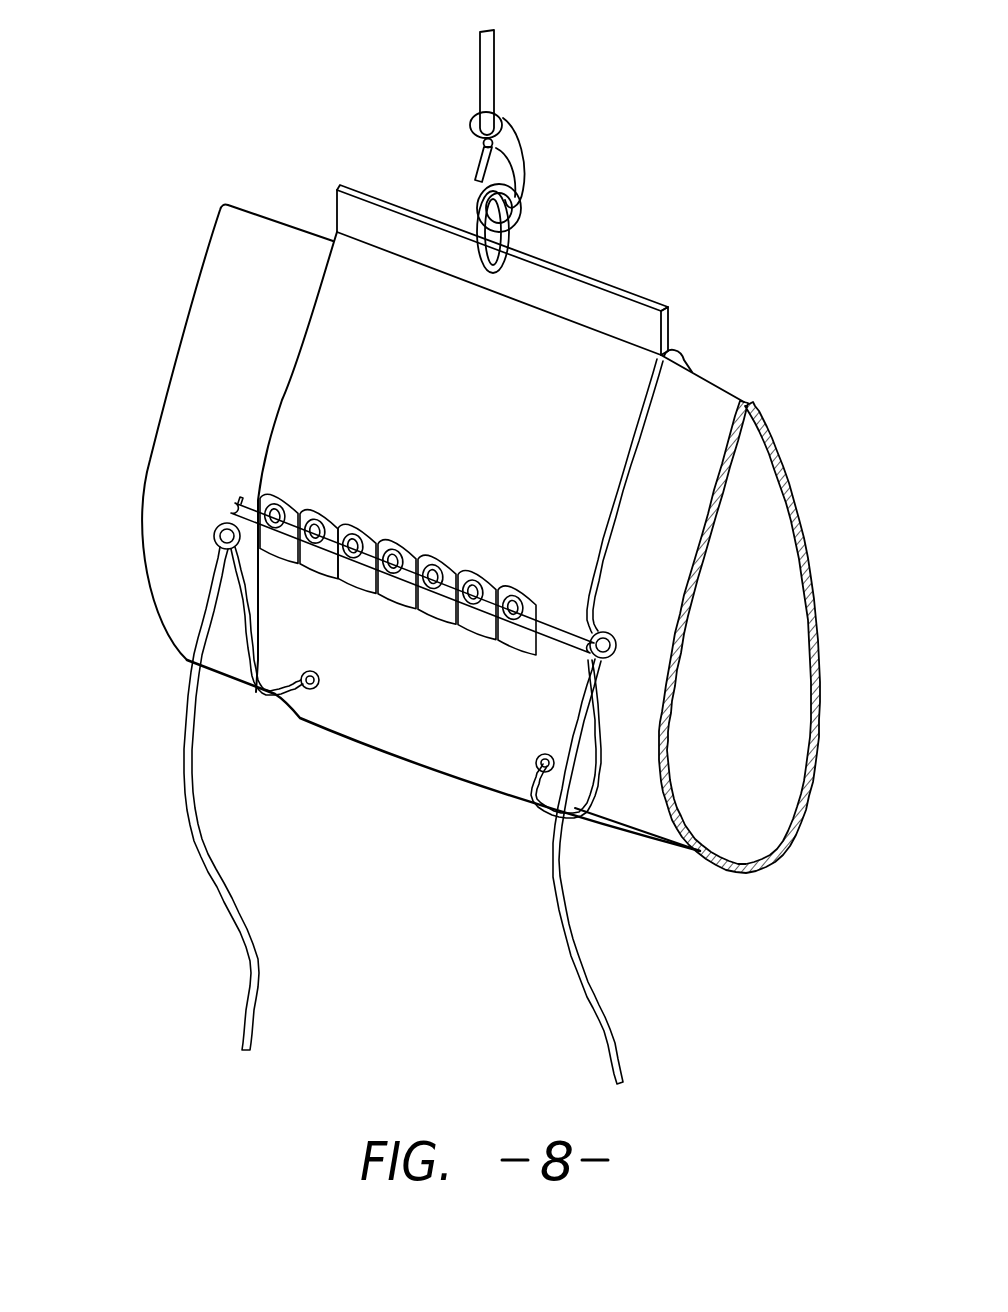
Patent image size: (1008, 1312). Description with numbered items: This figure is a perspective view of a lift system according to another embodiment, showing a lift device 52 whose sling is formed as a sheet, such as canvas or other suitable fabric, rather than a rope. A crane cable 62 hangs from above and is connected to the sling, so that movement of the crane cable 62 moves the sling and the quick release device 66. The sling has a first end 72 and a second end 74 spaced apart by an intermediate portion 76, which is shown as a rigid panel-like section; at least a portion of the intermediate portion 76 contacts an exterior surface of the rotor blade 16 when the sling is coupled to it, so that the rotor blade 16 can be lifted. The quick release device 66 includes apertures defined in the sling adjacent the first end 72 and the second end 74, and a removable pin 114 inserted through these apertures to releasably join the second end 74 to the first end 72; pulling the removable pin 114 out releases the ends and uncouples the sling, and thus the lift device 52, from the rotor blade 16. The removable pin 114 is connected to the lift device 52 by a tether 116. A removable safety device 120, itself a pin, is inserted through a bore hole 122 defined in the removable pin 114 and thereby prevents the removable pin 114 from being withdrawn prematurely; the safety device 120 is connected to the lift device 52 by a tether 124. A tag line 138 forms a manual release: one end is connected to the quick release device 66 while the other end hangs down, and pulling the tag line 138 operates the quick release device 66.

The rotor blade 16 is at (783, 483).
The lift device 52 is at (726, 197).
The crane cable 62 is at (497, 73).
The quick release device 66 is at (630, 618).
The first end 72 is at (363, 530).
The second end 74 is at (383, 600).
The intermediate portion 76 is at (563, 355).
The removable pin 114 is at (568, 640).
The tether 116 is at (522, 786).
The removable safety device 120 is at (213, 542).
The bore hole 122 is at (222, 508).
The tether 124 is at (240, 663).
The tag line 138 is at (258, 968).